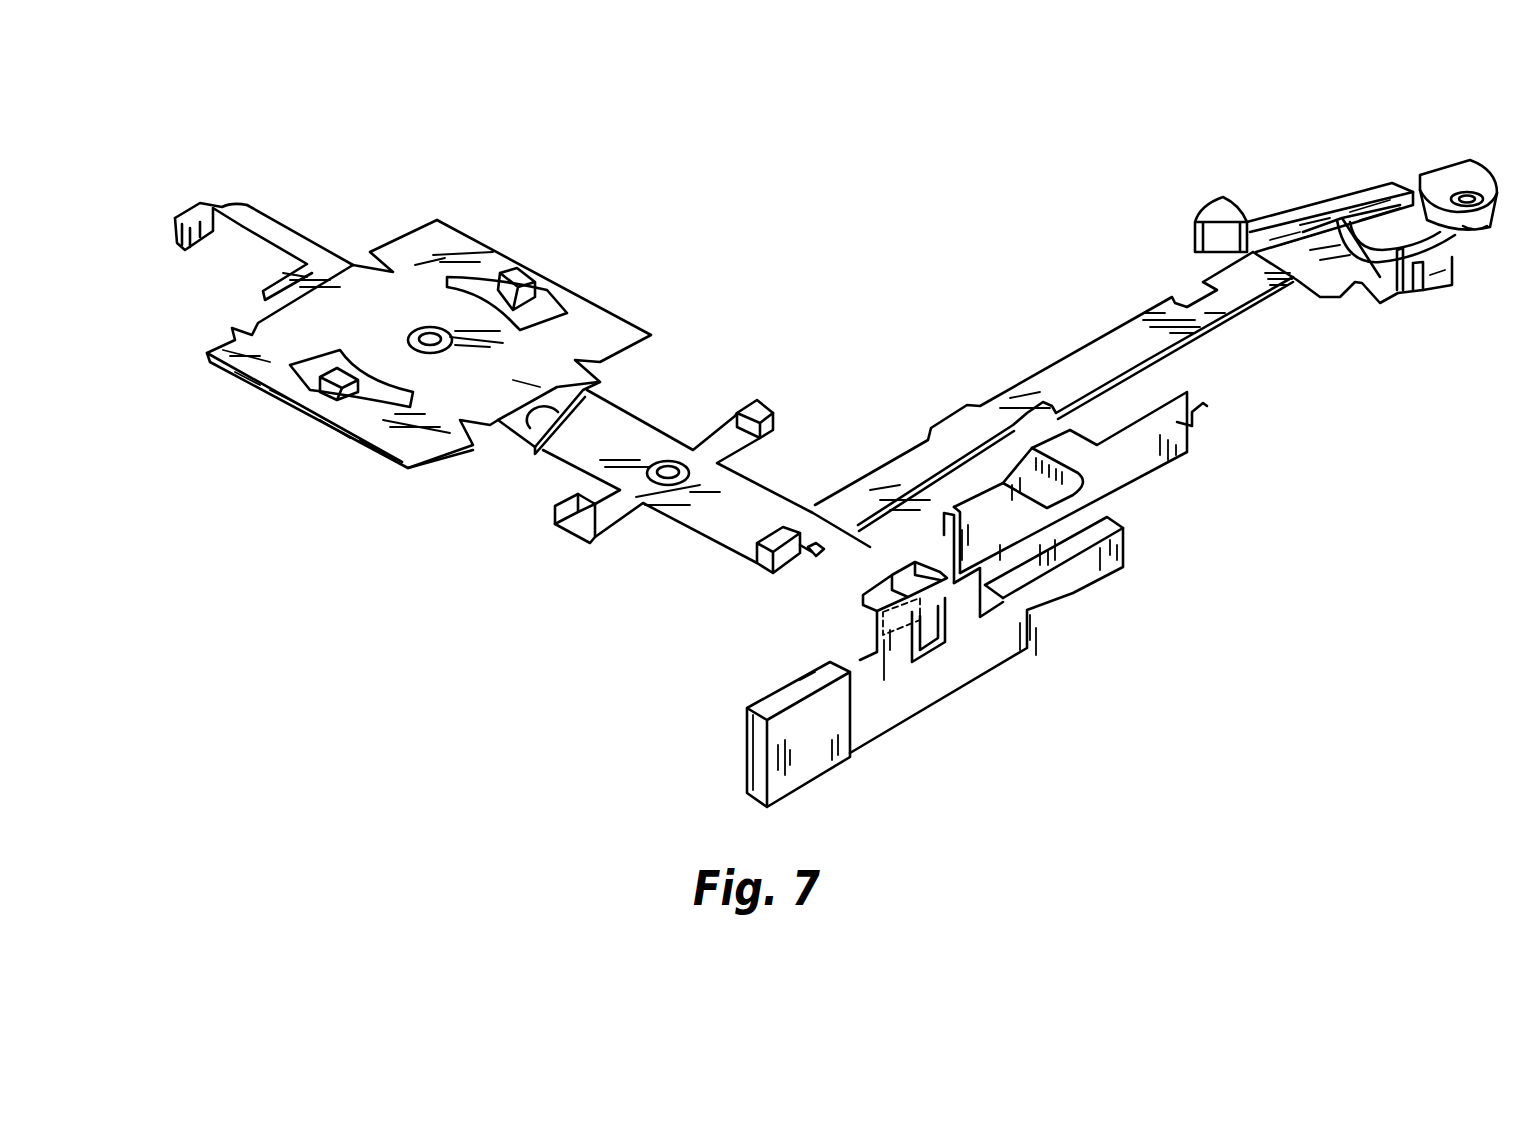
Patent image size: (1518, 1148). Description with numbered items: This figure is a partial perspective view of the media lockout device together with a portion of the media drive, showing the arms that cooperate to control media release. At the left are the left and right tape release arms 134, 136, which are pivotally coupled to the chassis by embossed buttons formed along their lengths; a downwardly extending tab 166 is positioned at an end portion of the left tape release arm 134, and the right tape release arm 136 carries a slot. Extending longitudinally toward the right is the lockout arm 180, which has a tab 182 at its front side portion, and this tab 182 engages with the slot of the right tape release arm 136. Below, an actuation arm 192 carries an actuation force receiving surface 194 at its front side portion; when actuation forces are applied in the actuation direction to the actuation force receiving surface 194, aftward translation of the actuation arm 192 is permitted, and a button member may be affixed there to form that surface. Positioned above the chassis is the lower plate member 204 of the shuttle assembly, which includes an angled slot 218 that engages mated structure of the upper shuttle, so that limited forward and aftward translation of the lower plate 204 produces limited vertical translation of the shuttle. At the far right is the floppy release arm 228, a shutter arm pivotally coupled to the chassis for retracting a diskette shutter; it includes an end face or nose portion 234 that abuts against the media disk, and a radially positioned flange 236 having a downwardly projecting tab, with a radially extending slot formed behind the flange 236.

The left tape release arm 134 is at (322, 267).
The right tape release arm 136 is at (618, 425).
The downwardly extending tab 166 is at (178, 235).
The lockout arm 180 is at (1235, 317).
The tab 182 is at (773, 530).
The actuation arm 192 is at (890, 708).
The actuation force receiving surface 194 is at (755, 750).
The lower plate member 204 is at (982, 523).
The angled slot 218 is at (1037, 495).
The floppy release arm 228 is at (1357, 195).
The nose portion 234 is at (1193, 252).
The flange 236 is at (1440, 267).